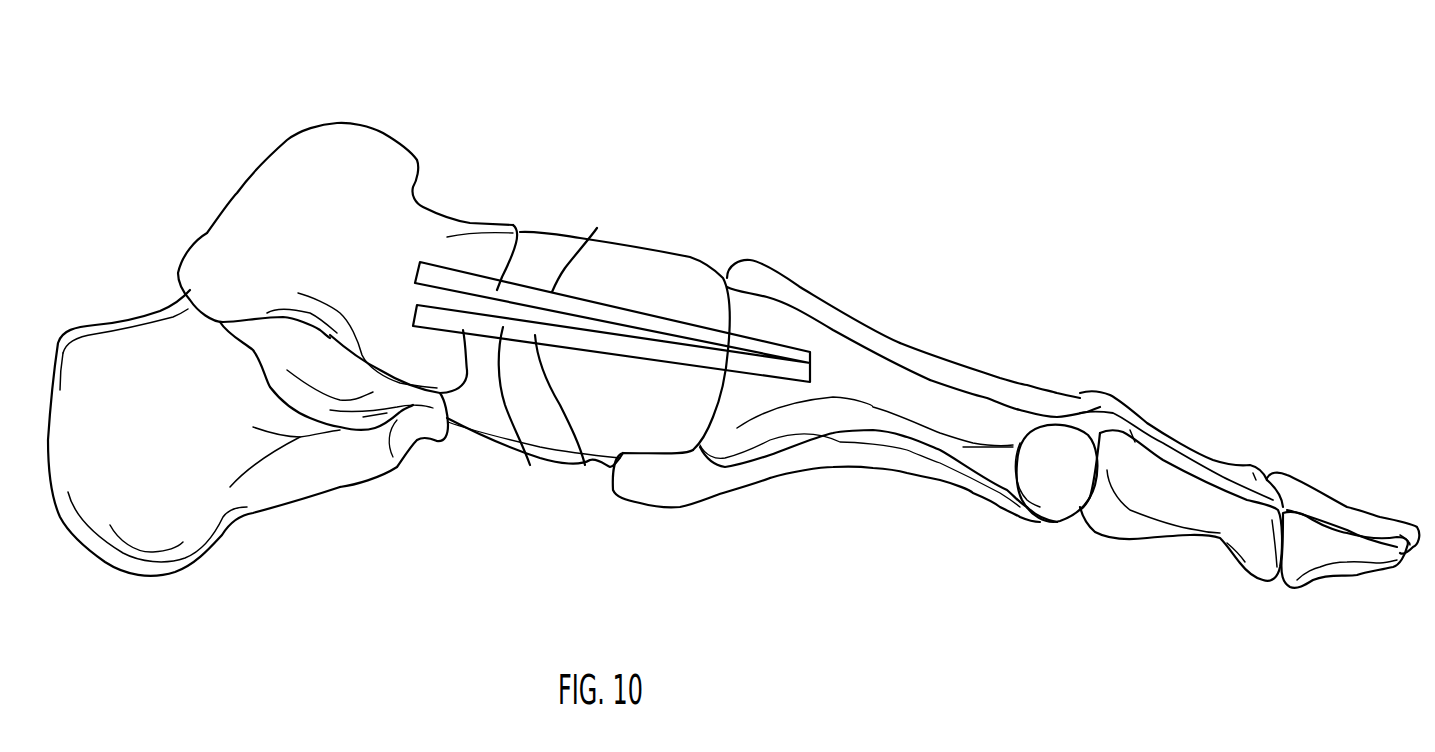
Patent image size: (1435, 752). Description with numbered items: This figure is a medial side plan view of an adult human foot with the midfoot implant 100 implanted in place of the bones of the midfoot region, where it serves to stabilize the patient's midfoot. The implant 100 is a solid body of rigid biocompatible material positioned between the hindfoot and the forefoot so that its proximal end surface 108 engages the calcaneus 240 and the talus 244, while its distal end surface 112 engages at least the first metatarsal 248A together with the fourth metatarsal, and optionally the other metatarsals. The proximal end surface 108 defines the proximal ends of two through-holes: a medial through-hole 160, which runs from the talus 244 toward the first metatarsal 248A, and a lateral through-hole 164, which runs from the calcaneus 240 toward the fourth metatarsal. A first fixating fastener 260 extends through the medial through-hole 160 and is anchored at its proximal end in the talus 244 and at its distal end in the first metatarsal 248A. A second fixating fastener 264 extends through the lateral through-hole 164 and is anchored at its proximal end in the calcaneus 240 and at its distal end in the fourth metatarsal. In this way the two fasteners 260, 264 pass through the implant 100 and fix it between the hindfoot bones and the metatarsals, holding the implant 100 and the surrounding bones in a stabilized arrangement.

The midfoot implant 100 is at (651, 237).
The proximal end surface 108 is at (441, 406).
The distal end surface 112 is at (733, 305).
The medial through-hole 160 is at (585, 465).
The lateral through-hole 164 is at (597, 228).
The calcaneus 240 is at (203, 530).
The talus 244 is at (370, 157).
The first metatarsal 248A is at (957, 417).
The first fixating fastener 260 is at (530, 465).
The second fixating fastener 264 is at (448, 273).